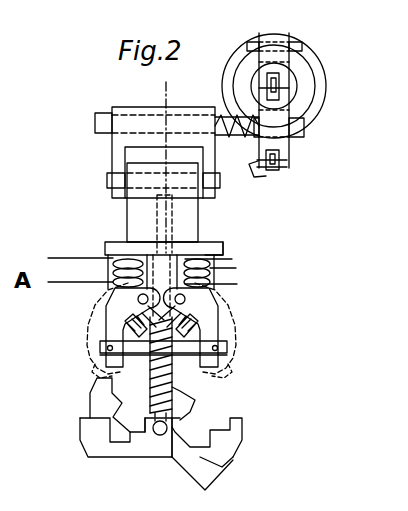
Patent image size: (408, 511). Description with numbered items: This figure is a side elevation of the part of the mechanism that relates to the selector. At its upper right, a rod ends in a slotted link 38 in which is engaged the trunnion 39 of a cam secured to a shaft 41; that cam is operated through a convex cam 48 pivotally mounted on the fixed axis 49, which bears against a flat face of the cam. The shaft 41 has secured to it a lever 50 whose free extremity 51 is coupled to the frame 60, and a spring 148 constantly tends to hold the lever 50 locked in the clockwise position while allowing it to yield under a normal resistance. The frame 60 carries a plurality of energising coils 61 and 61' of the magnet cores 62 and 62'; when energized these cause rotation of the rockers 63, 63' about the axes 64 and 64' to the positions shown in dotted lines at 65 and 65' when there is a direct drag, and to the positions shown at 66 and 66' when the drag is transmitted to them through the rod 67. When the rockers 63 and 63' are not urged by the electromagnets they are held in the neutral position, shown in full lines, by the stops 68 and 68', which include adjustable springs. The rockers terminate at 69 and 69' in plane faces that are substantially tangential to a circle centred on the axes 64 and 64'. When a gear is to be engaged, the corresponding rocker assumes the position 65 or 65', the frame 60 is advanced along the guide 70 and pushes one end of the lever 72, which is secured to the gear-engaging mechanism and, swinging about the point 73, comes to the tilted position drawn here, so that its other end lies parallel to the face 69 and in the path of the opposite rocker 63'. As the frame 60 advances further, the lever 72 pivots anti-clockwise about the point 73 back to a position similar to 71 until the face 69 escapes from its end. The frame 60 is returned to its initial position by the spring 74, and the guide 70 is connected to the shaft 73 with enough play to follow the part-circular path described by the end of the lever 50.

The slotted link 38 is at (272, 173).
The trunnion 39 is at (254, 177).
The shaft 41 is at (302, 133).
The convex cam 48 is at (282, 70).
The fixed axis 49 is at (302, 48).
The lever 50 is at (117, 146).
The free extremity 51 is at (110, 175).
The frame 60 is at (132, 214).
The energising coil 61 is at (92, 282).
The energising coil 61' is at (234, 251).
The magnet core 62 is at (130, 240).
The magnet core 62' is at (230, 234).
The rocker 63 is at (99, 320).
The rocker 63' is at (226, 305).
The axis 64 is at (101, 310).
The axis 64' is at (225, 283).
The rocker position under direct drag 65 is at (75, 365).
The rocker position under direct drag 65' is at (251, 342).
The rocker position under transmitted drag 66 is at (84, 408).
The rocker position under transmitted drag 66' is at (231, 403).
The rod 67 is at (227, 355).
The stop 68 is at (92, 328).
The stop 68' is at (233, 328).
The plane face 69 is at (80, 375).
The plane face 69' is at (240, 373).
The guide 70 is at (240, 420).
The lever position 71 is at (230, 442).
The lever 72 is at (112, 366).
The pivot point / shaft 73 is at (158, 434).
The spring 74 is at (174, 407).
The spring 148 is at (219, 134).